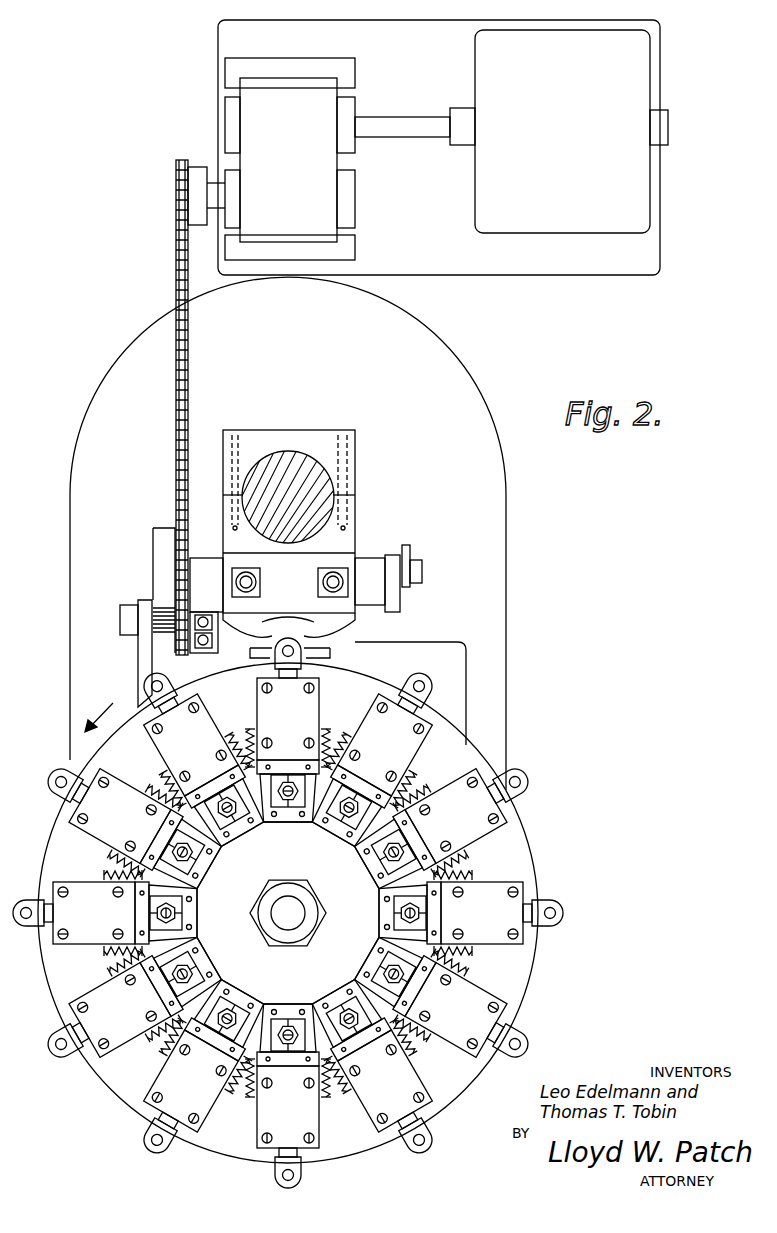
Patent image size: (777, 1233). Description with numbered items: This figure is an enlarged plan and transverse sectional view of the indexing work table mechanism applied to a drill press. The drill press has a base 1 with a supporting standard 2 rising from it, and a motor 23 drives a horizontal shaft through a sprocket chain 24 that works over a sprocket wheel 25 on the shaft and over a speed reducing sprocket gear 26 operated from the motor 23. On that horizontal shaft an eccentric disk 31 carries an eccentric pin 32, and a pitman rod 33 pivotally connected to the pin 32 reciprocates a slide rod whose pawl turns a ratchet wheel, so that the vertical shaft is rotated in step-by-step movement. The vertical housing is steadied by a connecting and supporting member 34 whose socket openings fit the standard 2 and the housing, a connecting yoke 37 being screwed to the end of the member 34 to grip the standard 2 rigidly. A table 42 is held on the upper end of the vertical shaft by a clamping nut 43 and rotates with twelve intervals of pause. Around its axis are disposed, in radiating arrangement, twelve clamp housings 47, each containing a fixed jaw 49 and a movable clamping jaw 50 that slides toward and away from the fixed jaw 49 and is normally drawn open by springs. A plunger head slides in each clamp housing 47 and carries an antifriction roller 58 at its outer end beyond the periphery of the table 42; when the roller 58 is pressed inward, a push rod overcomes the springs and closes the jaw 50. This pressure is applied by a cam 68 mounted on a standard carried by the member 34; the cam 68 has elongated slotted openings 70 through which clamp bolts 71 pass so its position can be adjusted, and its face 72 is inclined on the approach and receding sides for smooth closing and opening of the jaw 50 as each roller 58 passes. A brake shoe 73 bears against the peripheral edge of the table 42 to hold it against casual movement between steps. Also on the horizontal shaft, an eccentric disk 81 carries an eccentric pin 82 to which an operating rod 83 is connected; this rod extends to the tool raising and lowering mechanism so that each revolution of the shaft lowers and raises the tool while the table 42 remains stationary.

The base 1 is at (496, 505).
The supporting standard 2 is at (291, 460).
The motor 23 is at (637, 197).
The sprocket chain 24 is at (176, 283).
The sprocket wheel 25 is at (176, 540).
The speed reducing sprocket gear 26 is at (176, 192).
The eccentric disk 31 is at (156, 552).
The eccentric pin 32 is at (120, 612).
The pitman rod 33 is at (140, 647).
The connecting and supporting member 34 is at (343, 538).
The connecting yoke 37 is at (321, 445).
The table 42 is at (517, 847).
The clamping nut 43 is at (290, 940).
The clamp housing 47 is at (380, 908).
The fixed jaw 49 is at (188, 964).
The movable clamping jaw 50 is at (167, 996).
The antifriction roller 58 is at (566, 917).
The cam 68 is at (254, 622).
The elongated slotted openings 70 is at (262, 575).
The clamp bolts 71 is at (262, 598).
The cam face 72 is at (362, 628).
The brake shoe 73 is at (345, 648).
The eccentric disk 81 is at (401, 598).
The eccentric pin 82 is at (421, 562).
The operating rod 83 is at (408, 545).